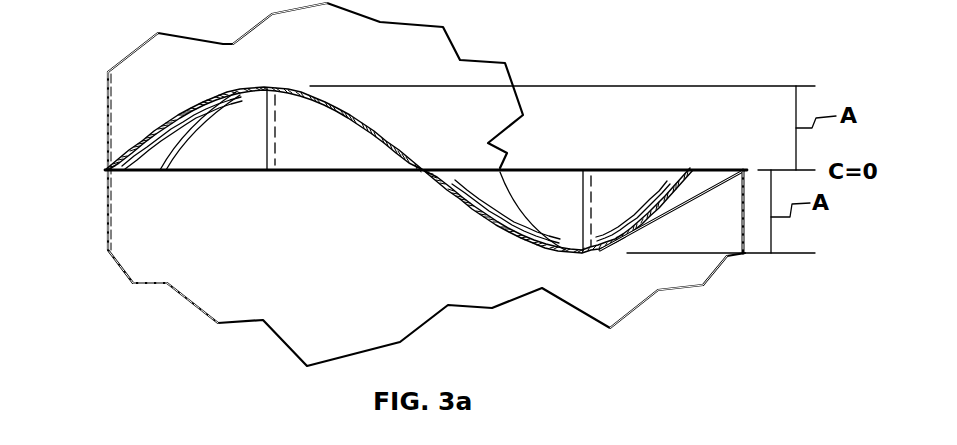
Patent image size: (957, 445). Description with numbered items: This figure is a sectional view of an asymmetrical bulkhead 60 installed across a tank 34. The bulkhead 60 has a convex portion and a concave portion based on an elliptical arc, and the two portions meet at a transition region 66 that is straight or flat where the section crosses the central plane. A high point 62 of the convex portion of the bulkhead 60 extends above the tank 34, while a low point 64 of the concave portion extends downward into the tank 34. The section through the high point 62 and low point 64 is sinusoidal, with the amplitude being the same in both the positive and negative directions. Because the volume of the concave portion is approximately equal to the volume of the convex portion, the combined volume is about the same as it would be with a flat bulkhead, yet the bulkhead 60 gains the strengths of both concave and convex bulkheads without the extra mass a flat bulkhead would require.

The tank 34 is at (108, 207).
The bulkhead 60 is at (305, 191).
The high point 62 is at (262, 84).
The low point 64 is at (560, 254).
The transition region 66 is at (422, 171).